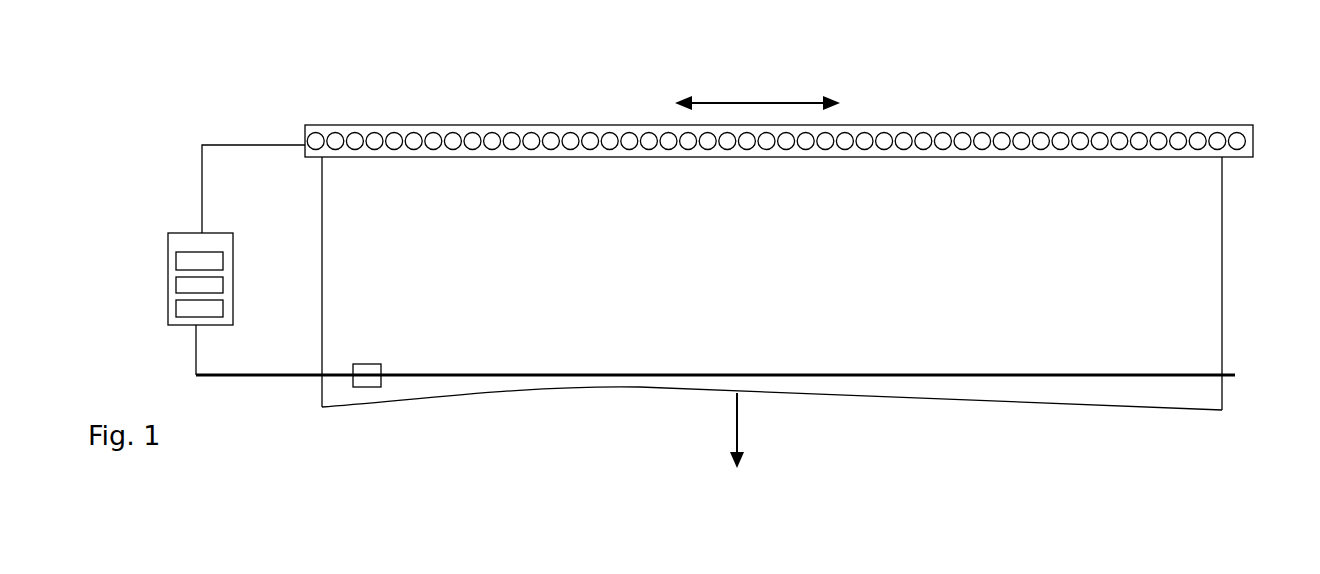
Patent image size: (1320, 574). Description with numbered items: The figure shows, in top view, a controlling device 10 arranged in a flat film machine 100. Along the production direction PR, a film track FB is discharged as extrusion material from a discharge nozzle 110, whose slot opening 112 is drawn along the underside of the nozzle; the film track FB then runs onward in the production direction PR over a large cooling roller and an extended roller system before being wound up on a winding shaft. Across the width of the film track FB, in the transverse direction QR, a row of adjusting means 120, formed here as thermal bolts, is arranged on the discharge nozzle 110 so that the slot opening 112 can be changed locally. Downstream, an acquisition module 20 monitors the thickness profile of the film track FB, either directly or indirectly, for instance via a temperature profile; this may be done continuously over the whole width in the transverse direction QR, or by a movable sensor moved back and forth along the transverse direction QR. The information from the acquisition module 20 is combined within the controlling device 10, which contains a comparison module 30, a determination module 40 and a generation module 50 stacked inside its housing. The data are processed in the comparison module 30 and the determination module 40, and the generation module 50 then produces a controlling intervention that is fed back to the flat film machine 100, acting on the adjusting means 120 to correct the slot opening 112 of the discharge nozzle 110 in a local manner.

The flat film machine 100 is at (228, 110).
The discharge nozzle 110 is at (810, 142).
The adjusting means 120 is at (1218, 134).
The slot opening 112 is at (1230, 168).
The controlling device 10 is at (190, 238).
The generation module 50 is at (223, 262).
The determination module 40 is at (218, 283).
The comparison module 30 is at (216, 308).
The acquisition module 20 is at (364, 380).
The film track FB is at (1203, 326).
The transverse direction QR is at (757, 91).
The production direction PR is at (751, 430).